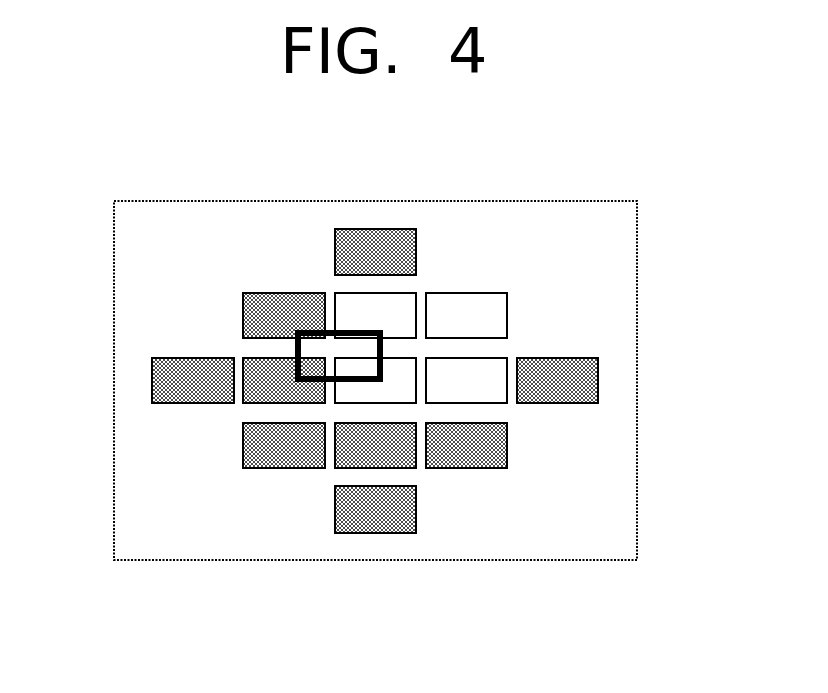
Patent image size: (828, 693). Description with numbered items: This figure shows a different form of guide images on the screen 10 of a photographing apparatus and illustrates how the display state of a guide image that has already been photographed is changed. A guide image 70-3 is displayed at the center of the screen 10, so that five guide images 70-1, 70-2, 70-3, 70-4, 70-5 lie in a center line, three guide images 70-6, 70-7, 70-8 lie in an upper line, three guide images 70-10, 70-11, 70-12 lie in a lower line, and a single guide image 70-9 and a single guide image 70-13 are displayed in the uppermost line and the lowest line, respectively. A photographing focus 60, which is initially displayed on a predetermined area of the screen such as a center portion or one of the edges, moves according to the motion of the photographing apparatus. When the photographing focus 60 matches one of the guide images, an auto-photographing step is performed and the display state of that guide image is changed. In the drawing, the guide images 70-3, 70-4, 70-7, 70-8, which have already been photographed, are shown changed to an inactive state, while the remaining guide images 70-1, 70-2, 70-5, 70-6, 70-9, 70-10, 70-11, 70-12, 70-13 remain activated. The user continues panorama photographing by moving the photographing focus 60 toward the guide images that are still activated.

The display screen 10 is at (138, 201).
The photographing focus 60 is at (383, 333).
The guide image 70-1 is at (152, 380).
The guide image 70-2 is at (243, 358).
The guide image 70-3 is at (417, 404).
The guide image 70-4 is at (507, 358).
The guide image 70-5 is at (598, 378).
The guide image 70-6 is at (257, 293).
The guide image 70-7 is at (335, 293).
The guide image 70-8 is at (480, 293).
The guide image 70-9 is at (400, 229).
The guide image 70-10 is at (247, 469).
The guide image 70-11 is at (333, 469).
The guide image 70-12 is at (500, 469).
The guide image 70-13 is at (407, 533).